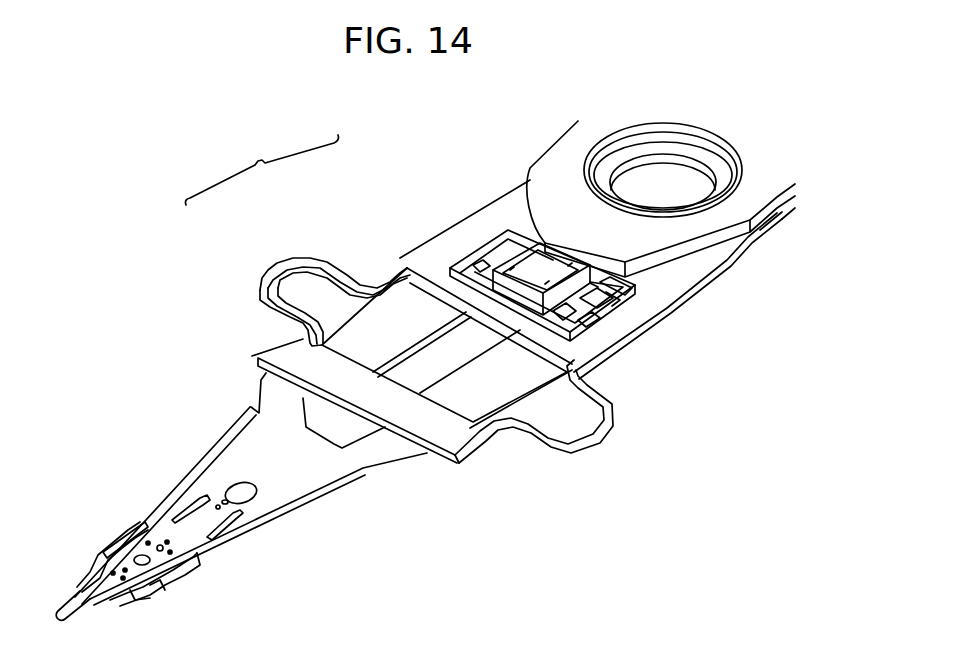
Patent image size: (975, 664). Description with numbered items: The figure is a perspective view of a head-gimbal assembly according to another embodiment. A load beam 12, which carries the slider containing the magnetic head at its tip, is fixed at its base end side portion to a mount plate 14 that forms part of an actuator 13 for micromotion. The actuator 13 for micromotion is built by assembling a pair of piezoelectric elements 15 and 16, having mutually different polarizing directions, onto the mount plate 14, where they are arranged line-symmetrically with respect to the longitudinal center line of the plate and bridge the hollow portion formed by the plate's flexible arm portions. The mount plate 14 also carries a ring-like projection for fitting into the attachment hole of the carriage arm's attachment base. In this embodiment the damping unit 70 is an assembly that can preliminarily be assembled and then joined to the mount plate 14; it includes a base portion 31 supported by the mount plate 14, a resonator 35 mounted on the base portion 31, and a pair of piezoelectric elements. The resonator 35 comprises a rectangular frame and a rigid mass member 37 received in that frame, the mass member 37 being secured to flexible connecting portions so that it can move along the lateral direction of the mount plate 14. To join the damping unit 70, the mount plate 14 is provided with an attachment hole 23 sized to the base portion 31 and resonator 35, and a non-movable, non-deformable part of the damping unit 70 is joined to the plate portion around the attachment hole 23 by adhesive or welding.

The load beam 12 is at (213, 480).
The actuator for micromotion 13 is at (262, 170).
The mount plate 14 is at (417, 257).
The piezoelectric element 15 is at (403, 310).
The piezoelectric element 16 is at (462, 393).
The attachment hole 23 is at (585, 305).
The base portion 31 is at (627, 277).
The resonator 35 is at (532, 260).
The mass member 37 is at (490, 266).
The damping unit 70 is at (431, 253).